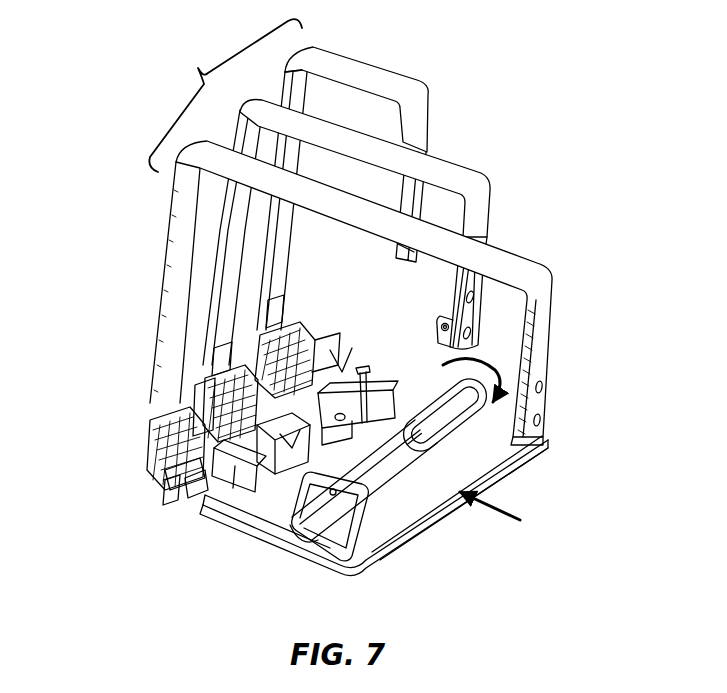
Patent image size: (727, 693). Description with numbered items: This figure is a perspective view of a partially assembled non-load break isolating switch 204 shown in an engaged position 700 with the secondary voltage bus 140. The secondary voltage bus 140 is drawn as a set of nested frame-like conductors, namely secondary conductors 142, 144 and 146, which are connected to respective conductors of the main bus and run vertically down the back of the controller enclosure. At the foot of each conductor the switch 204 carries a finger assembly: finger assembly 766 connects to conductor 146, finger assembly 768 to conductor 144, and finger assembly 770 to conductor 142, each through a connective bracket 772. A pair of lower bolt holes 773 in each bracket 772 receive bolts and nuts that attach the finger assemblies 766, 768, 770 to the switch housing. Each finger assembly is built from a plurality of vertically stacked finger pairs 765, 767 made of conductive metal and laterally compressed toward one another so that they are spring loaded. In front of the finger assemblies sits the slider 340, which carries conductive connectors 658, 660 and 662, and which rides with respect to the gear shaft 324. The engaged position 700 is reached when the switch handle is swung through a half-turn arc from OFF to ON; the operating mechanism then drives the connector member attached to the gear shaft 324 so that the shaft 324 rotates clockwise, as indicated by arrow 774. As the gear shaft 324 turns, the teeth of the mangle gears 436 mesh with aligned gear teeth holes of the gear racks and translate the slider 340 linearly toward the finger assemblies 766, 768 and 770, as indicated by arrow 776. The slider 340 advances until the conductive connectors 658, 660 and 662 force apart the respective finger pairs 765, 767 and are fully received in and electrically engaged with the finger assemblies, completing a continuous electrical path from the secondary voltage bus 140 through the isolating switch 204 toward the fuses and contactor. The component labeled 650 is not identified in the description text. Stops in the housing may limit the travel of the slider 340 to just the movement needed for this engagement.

The engaged position 700 is at (488, 63).
The secondary voltage bus 140 is at (225, 95).
The secondary conductor 142 is at (415, 107).
The secondary conductor 144 is at (472, 193).
The secondary conductor 146 is at (533, 282).
The slider 340 is at (375, 545).
The gear shaft 324 is at (383, 465).
The mangle gear 436 is at (438, 392).
The arrow 774 is at (493, 407).
The arrow 776 is at (508, 520).
The conductive connector 658 is at (343, 383).
The conductive connector 660 is at (302, 433).
The conductive connector 662 is at (240, 483).
The clip 650 is at (280, 523).
The finger assembly 770 is at (303, 326).
The finger assembly 768 is at (193, 383).
The finger assembly 766 is at (143, 445).
The finger 767 is at (195, 382).
The finger 765 is at (172, 472).
The connective bracket 772 is at (223, 353).
The lower bolt hole 773 is at (192, 483).
The non-load break isolating switch 204 is at (115, 492).